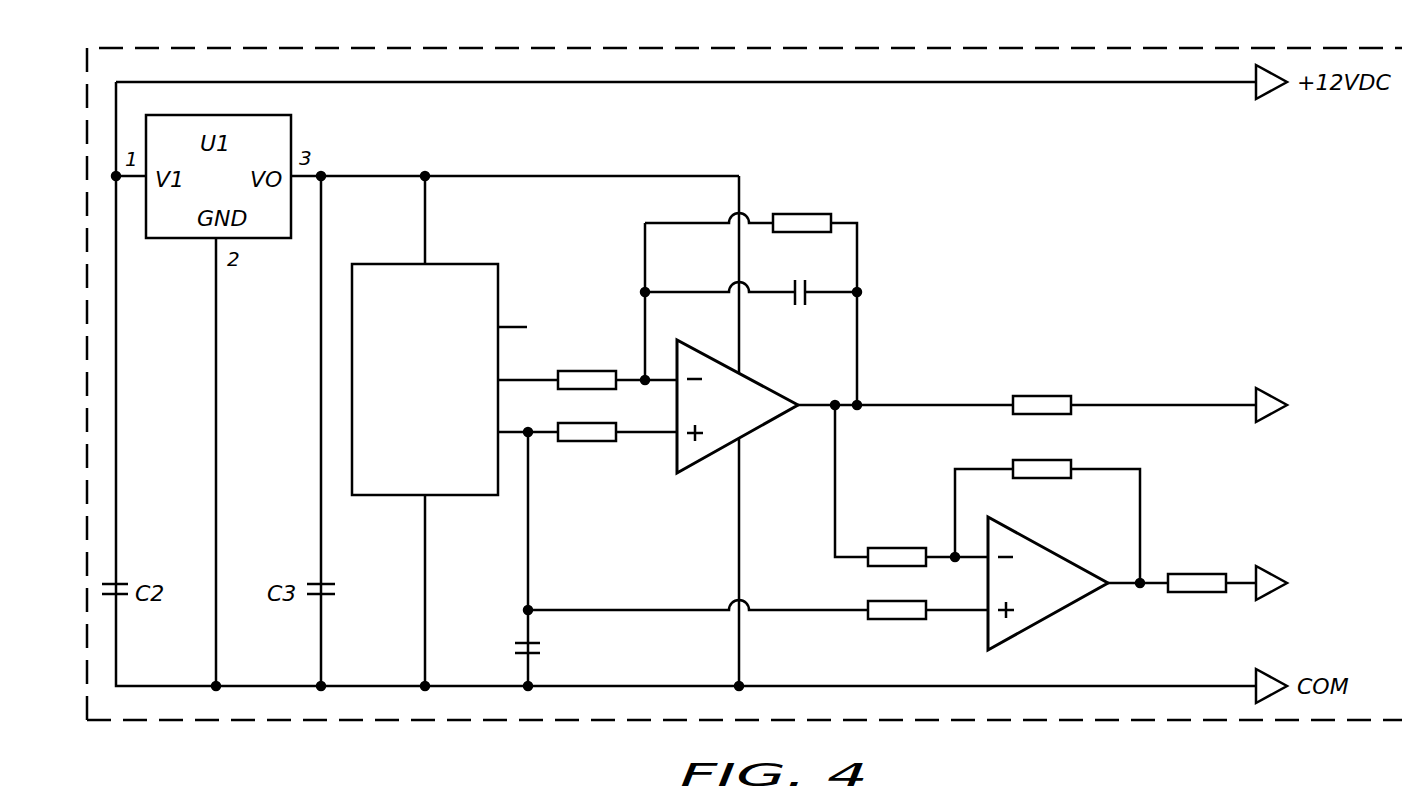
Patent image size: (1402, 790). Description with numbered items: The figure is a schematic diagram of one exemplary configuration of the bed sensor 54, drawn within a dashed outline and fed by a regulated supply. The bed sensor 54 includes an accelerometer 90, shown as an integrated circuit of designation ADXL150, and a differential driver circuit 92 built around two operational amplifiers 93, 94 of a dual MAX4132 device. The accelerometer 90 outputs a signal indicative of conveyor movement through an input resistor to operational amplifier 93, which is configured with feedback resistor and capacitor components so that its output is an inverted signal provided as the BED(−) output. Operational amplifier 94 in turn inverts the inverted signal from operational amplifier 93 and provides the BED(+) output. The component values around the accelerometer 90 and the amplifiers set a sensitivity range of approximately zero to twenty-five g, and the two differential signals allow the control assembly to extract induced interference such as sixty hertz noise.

The bed sensor 54 is at (953, 45).
The accelerometer 90 is at (487, 262).
The differential driver circuit 92 is at (927, 433).
The operational amplifier 93 is at (705, 492).
The operational amplifier 94 is at (1178, 492).